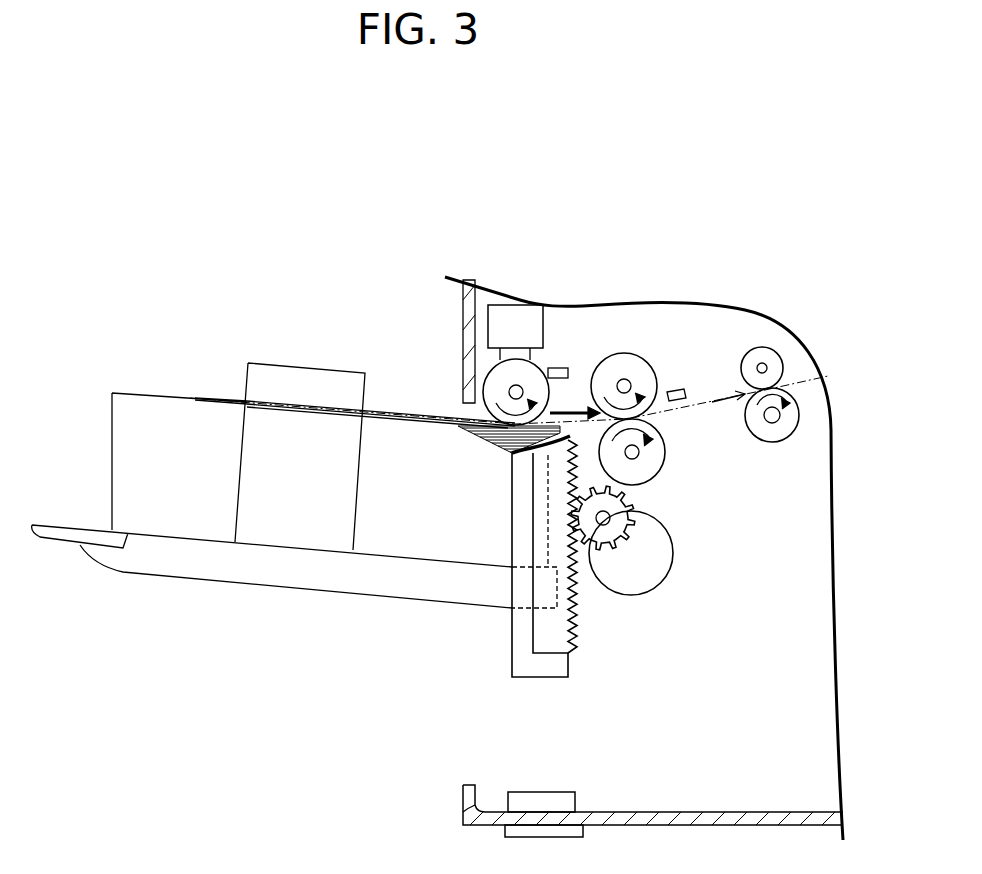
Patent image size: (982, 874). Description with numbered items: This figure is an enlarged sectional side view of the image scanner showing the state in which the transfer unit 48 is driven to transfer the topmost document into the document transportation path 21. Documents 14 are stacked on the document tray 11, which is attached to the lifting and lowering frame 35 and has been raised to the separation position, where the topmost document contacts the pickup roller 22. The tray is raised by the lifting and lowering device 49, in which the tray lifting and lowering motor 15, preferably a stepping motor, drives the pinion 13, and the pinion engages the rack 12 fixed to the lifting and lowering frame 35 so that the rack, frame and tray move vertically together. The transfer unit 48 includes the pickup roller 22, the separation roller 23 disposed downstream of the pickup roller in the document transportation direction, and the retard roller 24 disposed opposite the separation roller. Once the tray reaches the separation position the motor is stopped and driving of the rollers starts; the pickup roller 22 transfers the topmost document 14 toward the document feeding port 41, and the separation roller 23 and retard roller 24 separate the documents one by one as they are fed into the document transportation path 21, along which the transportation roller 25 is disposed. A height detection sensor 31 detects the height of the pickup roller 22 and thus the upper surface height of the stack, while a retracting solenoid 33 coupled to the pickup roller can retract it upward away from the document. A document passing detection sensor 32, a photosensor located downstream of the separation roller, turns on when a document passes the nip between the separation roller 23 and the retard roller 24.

The document tray 11 is at (147, 598).
The rack 12 is at (576, 638).
The pinion 13 is at (622, 523).
The documents 14 is at (220, 398).
The tray lifting and lowering motor 15 is at (645, 577).
The document transportation path 21 is at (785, 372).
The pickup roller 22 is at (496, 382).
The separation roller 23 is at (625, 360).
The retard roller 24 is at (653, 455).
The transportation roller 25 is at (782, 432).
The height detection sensor 31 is at (557, 368).
The document passing detection sensor 32 is at (678, 390).
The retracting solenoid 33 is at (508, 322).
The lifting and lowering frame 35 is at (523, 662).
The document feeding port 41 is at (448, 402).
The transfer unit 48 is at (487, 445).
The lifting and lowering device 49 is at (708, 273).